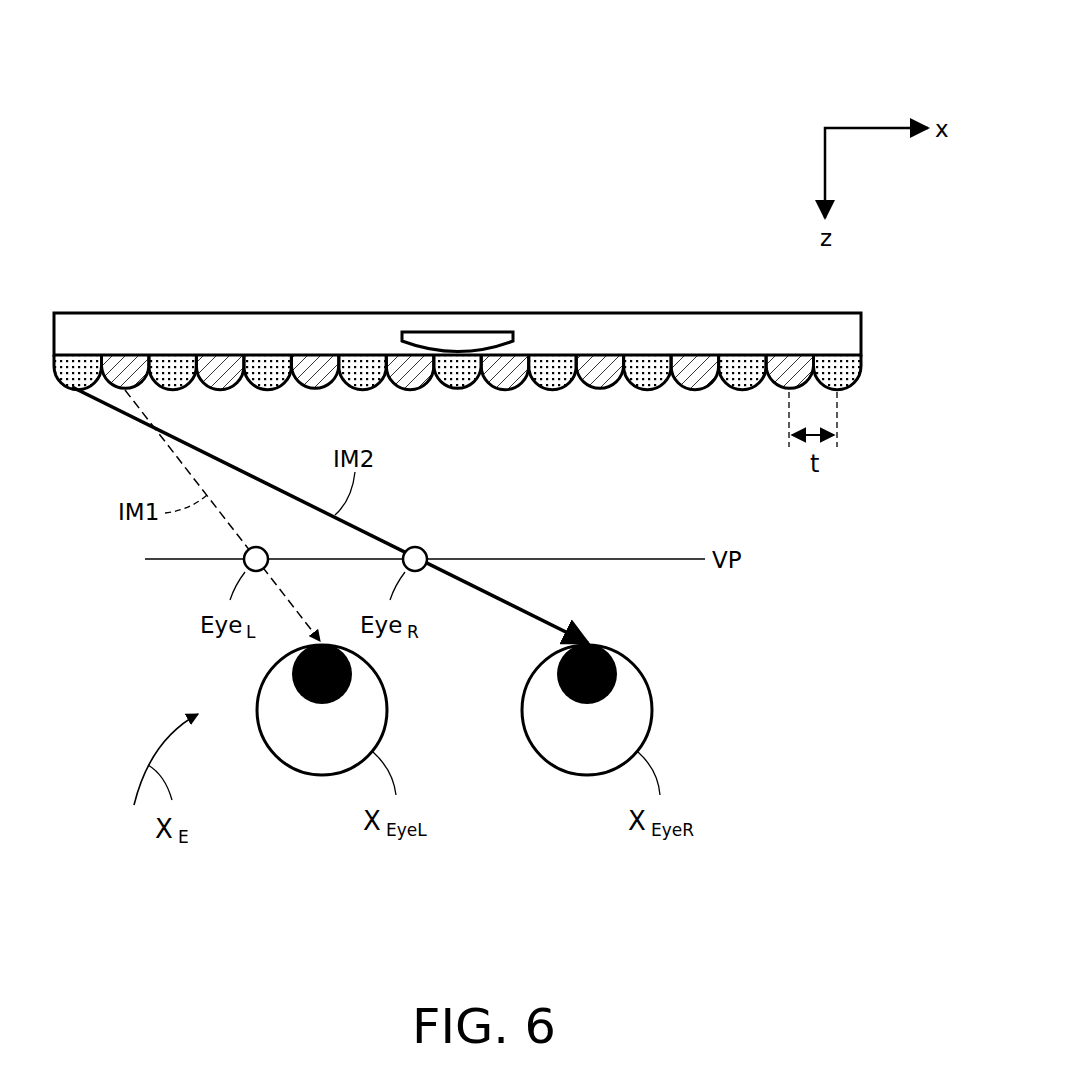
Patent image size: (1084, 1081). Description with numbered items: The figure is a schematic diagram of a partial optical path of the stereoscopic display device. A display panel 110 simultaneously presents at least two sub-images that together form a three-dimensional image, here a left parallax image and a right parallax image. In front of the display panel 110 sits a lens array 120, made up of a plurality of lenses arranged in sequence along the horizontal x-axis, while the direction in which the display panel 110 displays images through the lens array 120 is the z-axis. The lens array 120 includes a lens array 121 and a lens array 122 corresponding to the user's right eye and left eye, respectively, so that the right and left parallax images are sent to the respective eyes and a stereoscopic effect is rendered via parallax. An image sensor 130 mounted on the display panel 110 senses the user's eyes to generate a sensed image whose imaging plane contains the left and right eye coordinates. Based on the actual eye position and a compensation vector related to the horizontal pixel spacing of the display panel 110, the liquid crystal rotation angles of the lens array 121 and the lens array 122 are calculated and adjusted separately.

The display panel 110 is at (840, 338).
The lens array 120 is at (507, 200).
The lens array 121 is at (78, 372).
The lens array 122 is at (126, 372).
The image sensor 130 is at (456, 347).